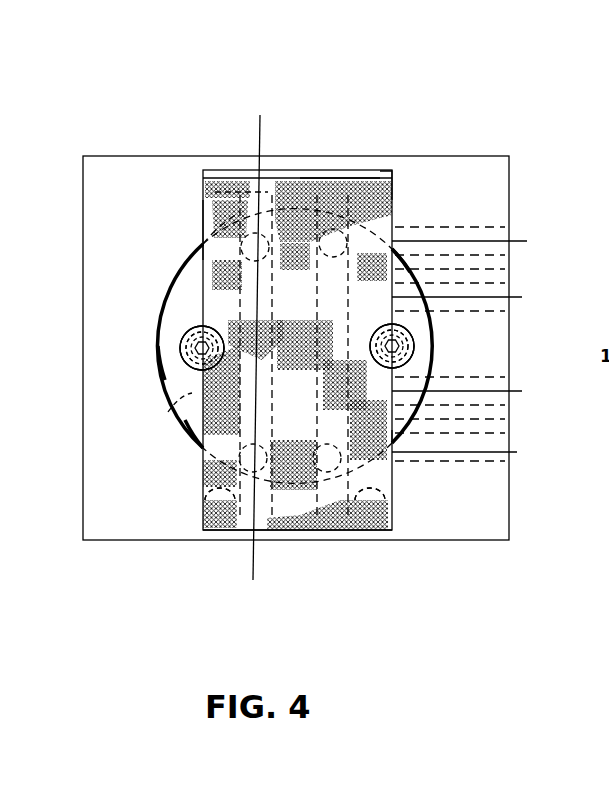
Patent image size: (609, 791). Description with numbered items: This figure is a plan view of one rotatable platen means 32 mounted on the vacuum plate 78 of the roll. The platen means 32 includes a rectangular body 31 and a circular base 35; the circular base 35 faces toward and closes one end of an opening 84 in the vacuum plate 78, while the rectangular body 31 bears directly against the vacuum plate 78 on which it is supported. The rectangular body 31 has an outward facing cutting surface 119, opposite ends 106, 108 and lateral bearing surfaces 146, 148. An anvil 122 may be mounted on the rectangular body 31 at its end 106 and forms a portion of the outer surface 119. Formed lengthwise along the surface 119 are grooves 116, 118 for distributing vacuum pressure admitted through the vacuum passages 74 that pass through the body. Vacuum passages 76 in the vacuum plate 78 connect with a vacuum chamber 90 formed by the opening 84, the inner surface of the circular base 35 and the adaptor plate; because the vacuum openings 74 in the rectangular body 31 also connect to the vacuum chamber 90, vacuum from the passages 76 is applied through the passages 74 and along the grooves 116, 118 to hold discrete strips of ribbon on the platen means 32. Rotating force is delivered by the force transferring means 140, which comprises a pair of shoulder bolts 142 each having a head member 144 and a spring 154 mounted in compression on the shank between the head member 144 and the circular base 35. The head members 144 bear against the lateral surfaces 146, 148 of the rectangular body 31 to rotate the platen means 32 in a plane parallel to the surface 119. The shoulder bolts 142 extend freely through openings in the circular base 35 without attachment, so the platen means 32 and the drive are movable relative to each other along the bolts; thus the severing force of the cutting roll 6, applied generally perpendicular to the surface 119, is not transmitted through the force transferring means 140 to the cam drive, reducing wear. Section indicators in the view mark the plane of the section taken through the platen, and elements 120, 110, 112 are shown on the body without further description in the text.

The cutting roll 6 is at (272, 90).
The rotatable platen means 32 is at (310, 115).
The vacuum plate 78 is at (509, 187).
The end 106 is at (293, 168).
The anvil 122 is at (372, 165).
The plate corner 120 is at (425, 165).
The vacuum passages 74 is at (345, 258).
The force transferring means 140 is at (168, 322).
The spring 154 is at (182, 337).
The shoulder bolts 142 is at (183, 328).
The head member 144 is at (188, 367).
The lateral bearing surface 148 is at (222, 322).
The lateral bearing surface 146 is at (385, 395).
The vacuum passages 76 is at (527, 241).
The opening 84 is at (395, 258).
The outward facing cutting surface 119 is at (207, 203).
The rectangular body 31 is at (203, 228).
The circular base 35 is at (175, 362).
The vacuum chamber 90 is at (170, 410).
The lower ring portion 112 is at (203, 443).
The groove 118 is at (205, 502).
The plate lower edge portion 110 is at (388, 428).
The groove 116 is at (390, 507).
The end 108 is at (303, 531).